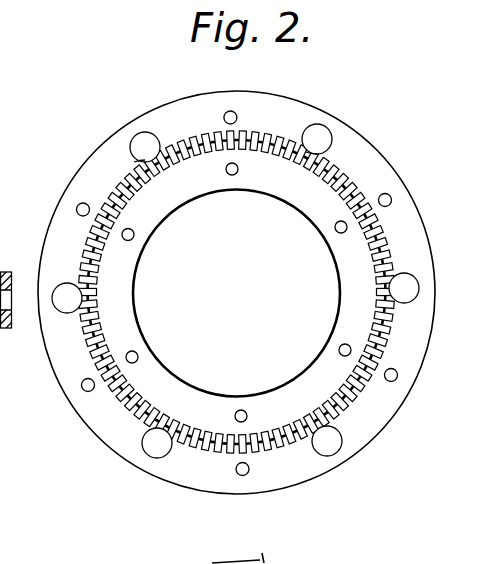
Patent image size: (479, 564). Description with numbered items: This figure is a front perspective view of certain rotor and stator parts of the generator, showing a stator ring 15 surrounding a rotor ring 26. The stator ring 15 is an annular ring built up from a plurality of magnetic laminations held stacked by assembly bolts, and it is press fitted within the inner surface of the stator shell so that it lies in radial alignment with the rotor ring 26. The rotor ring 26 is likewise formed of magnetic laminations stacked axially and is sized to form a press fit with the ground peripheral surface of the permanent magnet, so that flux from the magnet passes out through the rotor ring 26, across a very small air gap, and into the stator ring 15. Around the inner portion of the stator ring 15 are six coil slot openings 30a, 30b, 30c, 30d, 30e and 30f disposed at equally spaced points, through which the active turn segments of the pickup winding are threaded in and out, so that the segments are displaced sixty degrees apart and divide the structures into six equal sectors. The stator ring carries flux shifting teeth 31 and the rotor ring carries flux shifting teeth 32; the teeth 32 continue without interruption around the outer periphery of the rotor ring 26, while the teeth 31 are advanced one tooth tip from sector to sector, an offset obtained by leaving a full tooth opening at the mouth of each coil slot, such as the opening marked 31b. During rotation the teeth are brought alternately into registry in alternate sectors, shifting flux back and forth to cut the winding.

The stator ring 15 is at (115, 131).
The rotor ring 26 is at (170, 383).
The flux shifting teeth of the stator ring 31 is at (185, 153).
The flux shifting teeth of the rotor ring 32 is at (183, 162).
The coil slot opening 30a is at (144, 133).
The coil slot opening 30b is at (322, 140).
The coil slot opening 30c is at (405, 298).
The coil slot opening 30d is at (330, 455).
The coil slot opening 30e is at (163, 455).
The coil slot opening 30f is at (63, 308).
The notch 31b is at (134, 162).